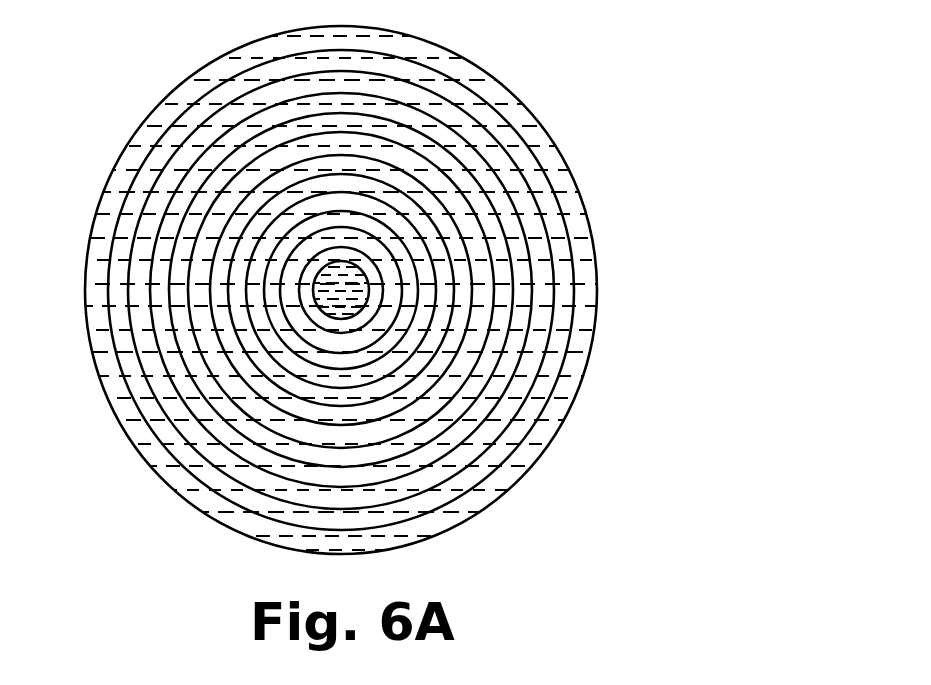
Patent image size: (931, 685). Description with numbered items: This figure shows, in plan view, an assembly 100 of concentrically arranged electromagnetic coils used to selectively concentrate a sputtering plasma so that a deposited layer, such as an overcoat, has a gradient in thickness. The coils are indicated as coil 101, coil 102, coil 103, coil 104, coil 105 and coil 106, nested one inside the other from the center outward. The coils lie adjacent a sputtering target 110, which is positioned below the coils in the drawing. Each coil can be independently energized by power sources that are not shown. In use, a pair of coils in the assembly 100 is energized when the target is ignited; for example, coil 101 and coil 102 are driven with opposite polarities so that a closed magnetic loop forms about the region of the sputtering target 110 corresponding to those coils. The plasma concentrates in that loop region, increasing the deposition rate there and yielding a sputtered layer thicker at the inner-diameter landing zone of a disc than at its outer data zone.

The assembly 100 is at (537, 525).
The electromagnetic coil 101 is at (365, 318).
The electromagnetic coil 102 is at (403, 320).
The electromagnetic coil 103 is at (437, 323).
The electromagnetic coil 104 is at (480, 295).
The electromagnetic coil 105 is at (510, 225).
The electromagnetic coil 106 is at (515, 148).
The sputtering target 110 is at (190, 502).